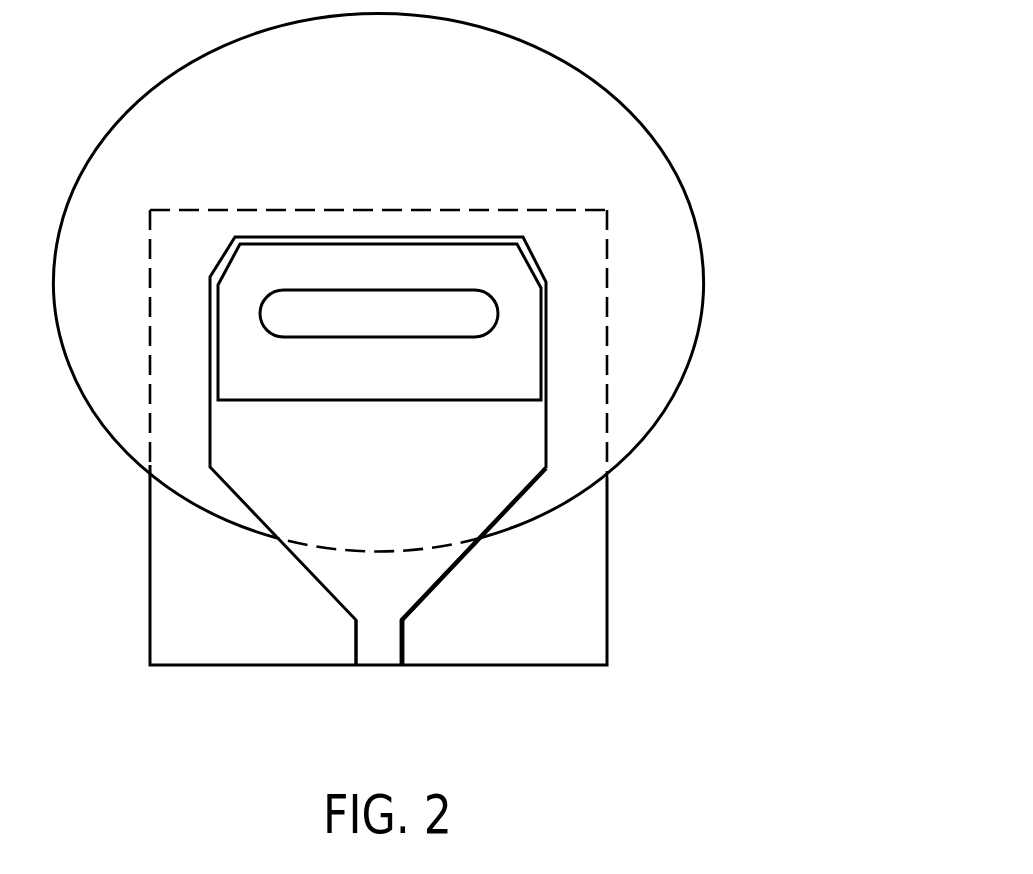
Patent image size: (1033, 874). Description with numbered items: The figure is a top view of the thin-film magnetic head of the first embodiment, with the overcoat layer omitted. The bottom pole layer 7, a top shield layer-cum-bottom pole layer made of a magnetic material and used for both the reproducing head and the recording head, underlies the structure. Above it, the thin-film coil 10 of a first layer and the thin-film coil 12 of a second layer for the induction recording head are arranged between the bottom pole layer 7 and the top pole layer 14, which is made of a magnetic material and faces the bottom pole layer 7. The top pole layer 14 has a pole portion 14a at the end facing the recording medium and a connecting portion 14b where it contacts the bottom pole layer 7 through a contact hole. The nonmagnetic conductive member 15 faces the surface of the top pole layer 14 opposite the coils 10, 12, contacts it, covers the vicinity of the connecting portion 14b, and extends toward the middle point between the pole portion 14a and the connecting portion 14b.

The thin-film coil of a first layer 10 is at (378, 280).
The thin-film coil of a second layer 12 is at (641, 125).
The bottom pole layer 7 is at (590, 593).
The top pole layer 14 is at (463, 503).
The pole portion 14a is at (393, 650).
The connecting portion 14b is at (477, 310).
The nonmagnetic conductive member 15 is at (512, 365).